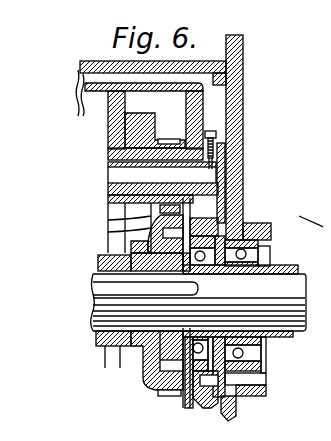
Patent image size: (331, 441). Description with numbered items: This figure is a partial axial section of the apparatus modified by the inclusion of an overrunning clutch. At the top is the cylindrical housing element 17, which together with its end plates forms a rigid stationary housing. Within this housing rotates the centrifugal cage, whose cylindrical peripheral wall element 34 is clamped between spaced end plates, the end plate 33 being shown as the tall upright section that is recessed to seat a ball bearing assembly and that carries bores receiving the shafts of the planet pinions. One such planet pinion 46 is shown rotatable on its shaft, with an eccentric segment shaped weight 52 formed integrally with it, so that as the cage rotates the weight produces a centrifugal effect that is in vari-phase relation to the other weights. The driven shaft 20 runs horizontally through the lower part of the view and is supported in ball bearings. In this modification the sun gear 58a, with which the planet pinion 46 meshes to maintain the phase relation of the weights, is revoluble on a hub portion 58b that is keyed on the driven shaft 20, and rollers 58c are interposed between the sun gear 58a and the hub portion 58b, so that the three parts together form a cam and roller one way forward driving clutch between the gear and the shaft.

The cylindrical housing element 17 is at (88, 52).
The cylindrical peripheral wall element 34 is at (77, 72).
The end plate 33 is at (195, 100).
The planet pinion 46 is at (160, 132).
The eccentric segment shaped weight 52 is at (125, 120).
The sun gear 58a is at (140, 203).
The rollers 58c is at (157, 222).
The hub portion 58b is at (130, 236).
The driven shaft 20 is at (93, 300).